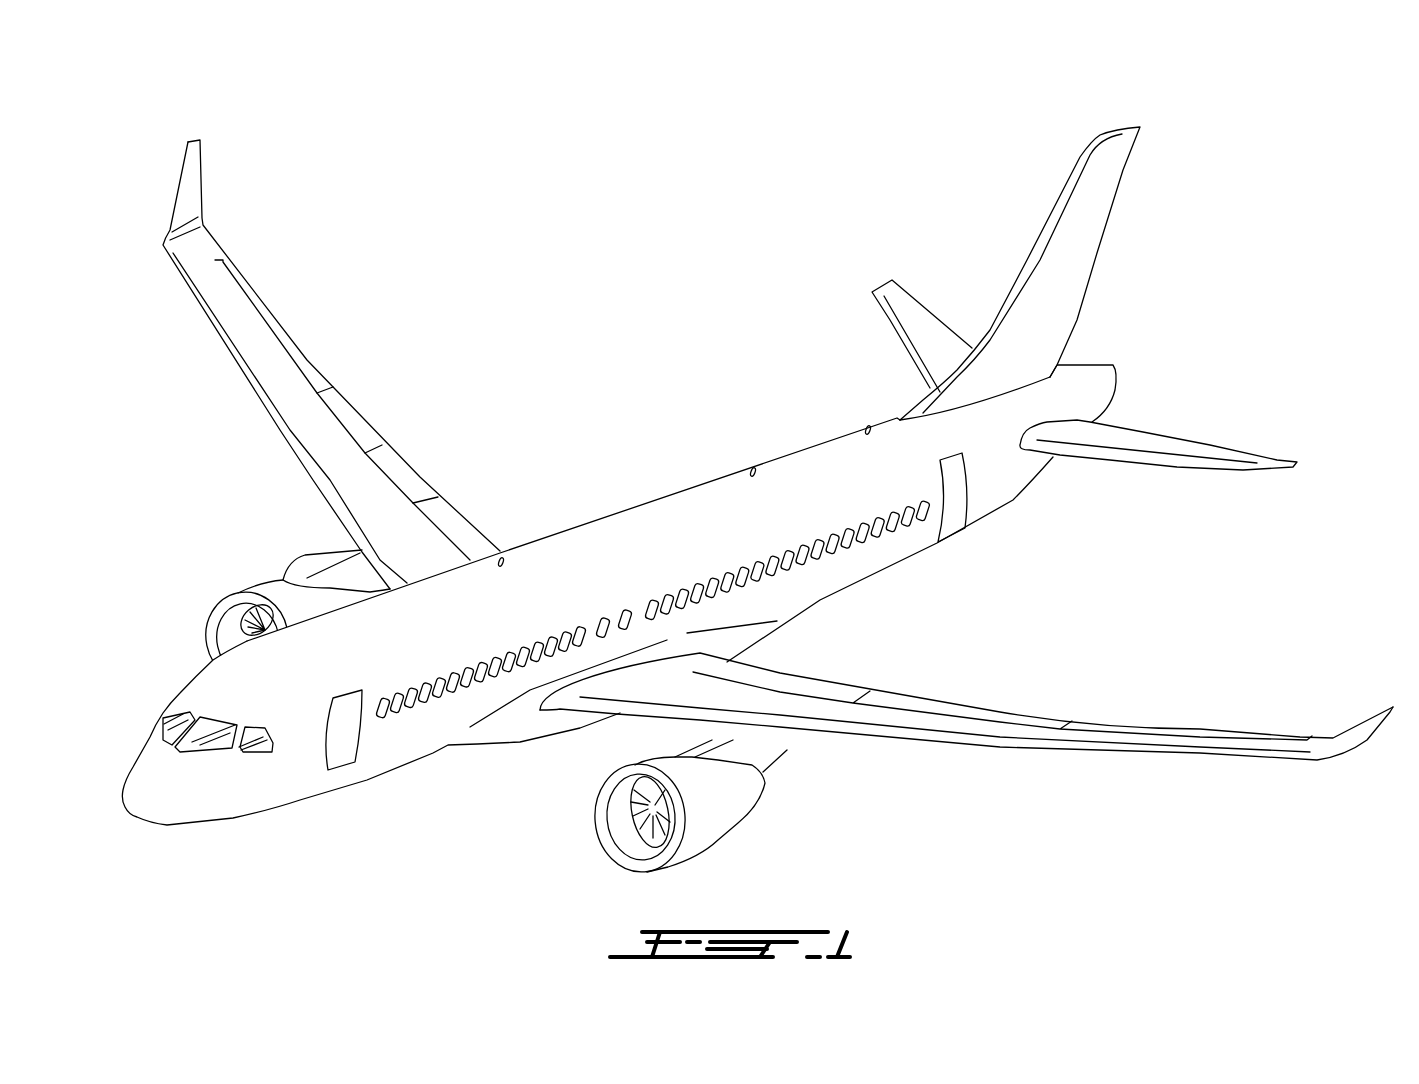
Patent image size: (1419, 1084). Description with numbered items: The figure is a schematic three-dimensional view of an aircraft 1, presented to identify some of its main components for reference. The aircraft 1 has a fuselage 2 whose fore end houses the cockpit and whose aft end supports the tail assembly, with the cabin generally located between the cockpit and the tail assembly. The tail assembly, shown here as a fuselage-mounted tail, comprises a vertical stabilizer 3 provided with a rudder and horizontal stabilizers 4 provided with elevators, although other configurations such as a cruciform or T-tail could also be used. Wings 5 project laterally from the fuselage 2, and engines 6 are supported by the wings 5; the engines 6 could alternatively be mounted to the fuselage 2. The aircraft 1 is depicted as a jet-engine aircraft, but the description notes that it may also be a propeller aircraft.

The aircraft 1 is at (190, 112).
The fuselage 2 is at (403, 745).
The vertical stabilizer 3 is at (1080, 212).
The horizontal stabilizers 4 is at (908, 325).
The wings 5 is at (366, 475).
The engines 6 is at (276, 583).